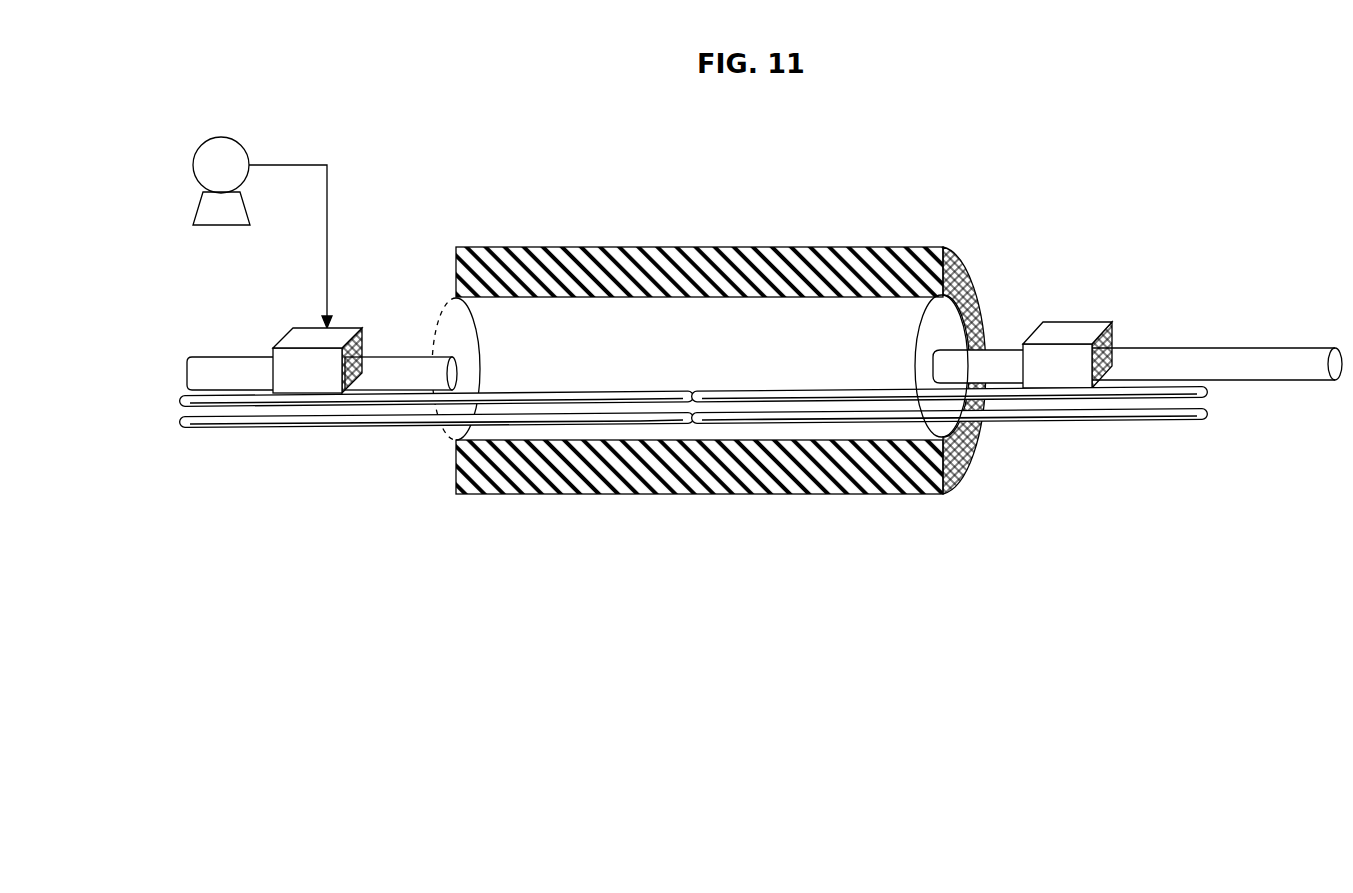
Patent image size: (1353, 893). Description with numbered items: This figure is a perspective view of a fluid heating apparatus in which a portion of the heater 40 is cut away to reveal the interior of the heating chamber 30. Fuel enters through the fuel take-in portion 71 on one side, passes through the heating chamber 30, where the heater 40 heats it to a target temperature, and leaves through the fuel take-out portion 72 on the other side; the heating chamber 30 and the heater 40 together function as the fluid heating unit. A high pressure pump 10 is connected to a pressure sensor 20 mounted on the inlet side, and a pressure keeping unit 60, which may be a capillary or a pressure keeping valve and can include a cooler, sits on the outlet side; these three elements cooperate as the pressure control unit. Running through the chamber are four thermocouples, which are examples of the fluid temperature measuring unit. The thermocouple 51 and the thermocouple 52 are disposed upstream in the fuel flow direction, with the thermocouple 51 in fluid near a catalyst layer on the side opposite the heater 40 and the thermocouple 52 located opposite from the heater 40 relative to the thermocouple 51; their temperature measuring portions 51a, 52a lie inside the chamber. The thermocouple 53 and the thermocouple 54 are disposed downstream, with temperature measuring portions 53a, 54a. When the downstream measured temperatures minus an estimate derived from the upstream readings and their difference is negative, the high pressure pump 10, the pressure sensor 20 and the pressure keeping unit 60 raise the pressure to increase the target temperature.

The high pressure pump 10 is at (221, 137).
The pressure sensor 20 is at (293, 330).
The heating chamber 30 is at (980, 280).
The heater 40 is at (703, 247).
The thermocouple 51 is at (185, 419).
The temperature measuring portion 51a is at (650, 419).
The thermocouple 52 is at (185, 400).
The temperature measuring portion 52a is at (600, 398).
The thermocouple 53 is at (1204, 414).
The temperature measuring portion 53a is at (745, 418).
The thermocouple 54 is at (1202, 393).
The temperature measuring portion 54a is at (830, 397).
The pressure keeping unit 60 is at (1085, 328).
The fuel take-in portion 71 is at (220, 357).
The fuel take-out portion 72 is at (1213, 352).